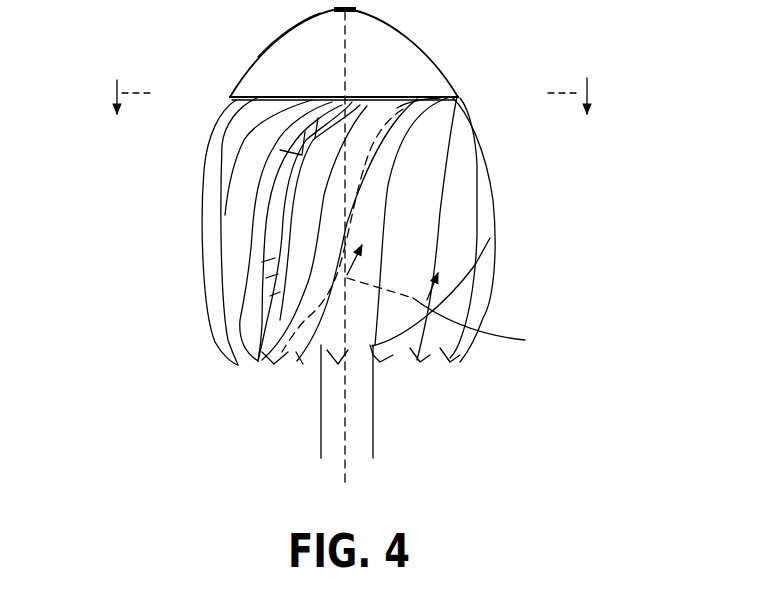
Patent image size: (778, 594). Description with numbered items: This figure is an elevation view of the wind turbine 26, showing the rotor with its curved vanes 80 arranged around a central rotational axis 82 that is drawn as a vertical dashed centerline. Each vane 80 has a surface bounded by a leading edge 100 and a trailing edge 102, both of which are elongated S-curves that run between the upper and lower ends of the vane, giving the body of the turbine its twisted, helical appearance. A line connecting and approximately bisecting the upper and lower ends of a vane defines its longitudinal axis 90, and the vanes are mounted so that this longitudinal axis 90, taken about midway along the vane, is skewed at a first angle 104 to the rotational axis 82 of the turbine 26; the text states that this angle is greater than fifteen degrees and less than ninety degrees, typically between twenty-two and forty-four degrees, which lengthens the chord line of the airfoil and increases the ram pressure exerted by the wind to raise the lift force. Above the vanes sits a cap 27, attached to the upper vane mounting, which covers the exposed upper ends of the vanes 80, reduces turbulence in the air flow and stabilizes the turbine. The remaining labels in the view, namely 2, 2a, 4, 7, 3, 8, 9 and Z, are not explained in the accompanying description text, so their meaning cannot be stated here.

The wind turbine 26 is at (115, 56).
The cap 27 is at (266, 51).
The rotational axis 82 is at (345, 47).
The dome cap 4 is at (432, 58).
The longitudinal axis 90 is at (400, 110).
The helical blade 2 is at (489, 160).
The blade outer surface 2a is at (443, 205).
The trailing edge 102 is at (345, 278).
The vane 80 is at (441, 262).
The leading edge 100 is at (489, 323).
The first angle 104 is at (304, 364).
The shaft 7 is at (376, 409).
The section line 8- 8 is at (155, 212).
The section line 9- 9 is at (155, 290).
The view direction 3 is at (315, 488).
The section line Z- Z is at (351, 96).